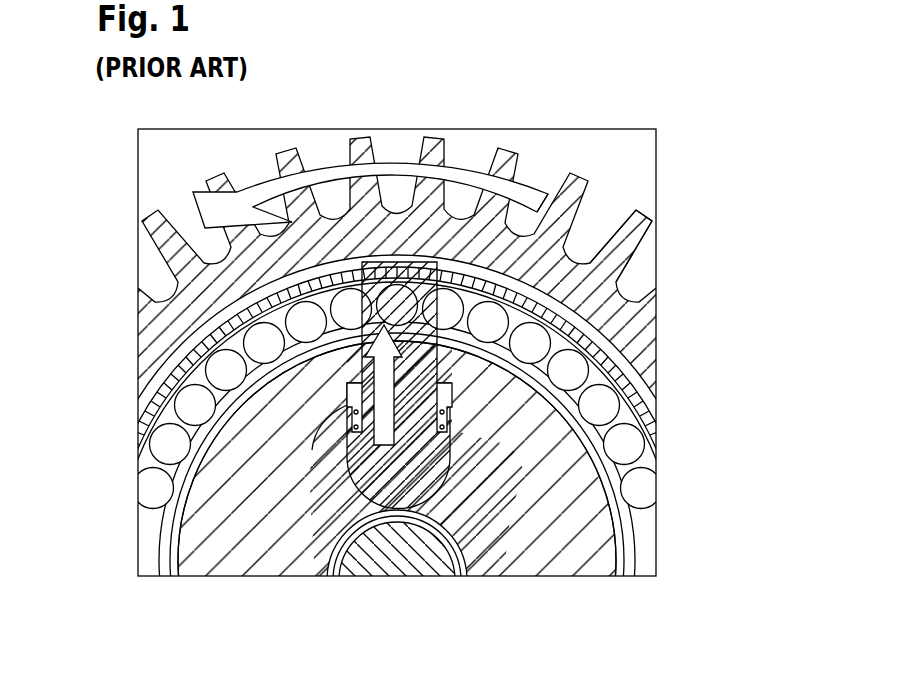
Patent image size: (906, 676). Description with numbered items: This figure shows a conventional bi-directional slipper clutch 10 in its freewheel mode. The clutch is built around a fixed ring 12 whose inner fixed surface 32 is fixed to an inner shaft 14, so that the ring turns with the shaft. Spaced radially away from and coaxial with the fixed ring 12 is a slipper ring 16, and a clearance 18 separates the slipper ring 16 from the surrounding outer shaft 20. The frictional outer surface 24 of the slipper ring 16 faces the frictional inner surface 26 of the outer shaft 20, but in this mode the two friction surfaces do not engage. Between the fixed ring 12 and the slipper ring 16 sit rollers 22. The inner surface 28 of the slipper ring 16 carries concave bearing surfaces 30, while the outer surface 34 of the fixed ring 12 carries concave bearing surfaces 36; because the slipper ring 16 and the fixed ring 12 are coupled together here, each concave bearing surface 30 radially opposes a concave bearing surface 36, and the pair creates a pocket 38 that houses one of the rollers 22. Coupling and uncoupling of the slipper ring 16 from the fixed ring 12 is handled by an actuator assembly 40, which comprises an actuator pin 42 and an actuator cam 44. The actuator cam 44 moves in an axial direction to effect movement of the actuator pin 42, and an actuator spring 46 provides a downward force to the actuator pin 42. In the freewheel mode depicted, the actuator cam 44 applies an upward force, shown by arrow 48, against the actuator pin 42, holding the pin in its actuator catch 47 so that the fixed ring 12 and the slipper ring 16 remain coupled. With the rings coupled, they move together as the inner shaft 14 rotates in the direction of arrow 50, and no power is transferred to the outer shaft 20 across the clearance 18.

The bi-directional slipper clutch 10 is at (97, 149).
The fixed ring 12 is at (418, 481).
The inner shaft 14 is at (268, 485).
The slipper ring 16 is at (232, 304).
The clearance 18 is at (603, 273).
The outer shaft 20 is at (268, 257).
The rollers 22 is at (628, 445).
The frictional outer surface 24 is at (628, 345).
The frictional inner surface 26 is at (638, 371).
The inner surface 28 is at (632, 408).
The concave bearing surfaces 30 is at (446, 478).
The inner fixed surface 32 is at (603, 520).
The outer surface 34 is at (637, 513).
The concave bearing surfaces 36 is at (472, 504).
The pocket 38 is at (605, 462).
The actuator assembly 40 is at (477, 438).
The actuator pin 42 is at (385, 307).
The actuator cam 44 is at (412, 550).
The actuator spring 46 is at (312, 450).
The actuator catch 47 is at (493, 203).
The arrow 48 is at (383, 422).
The arrow 50 is at (409, 172).